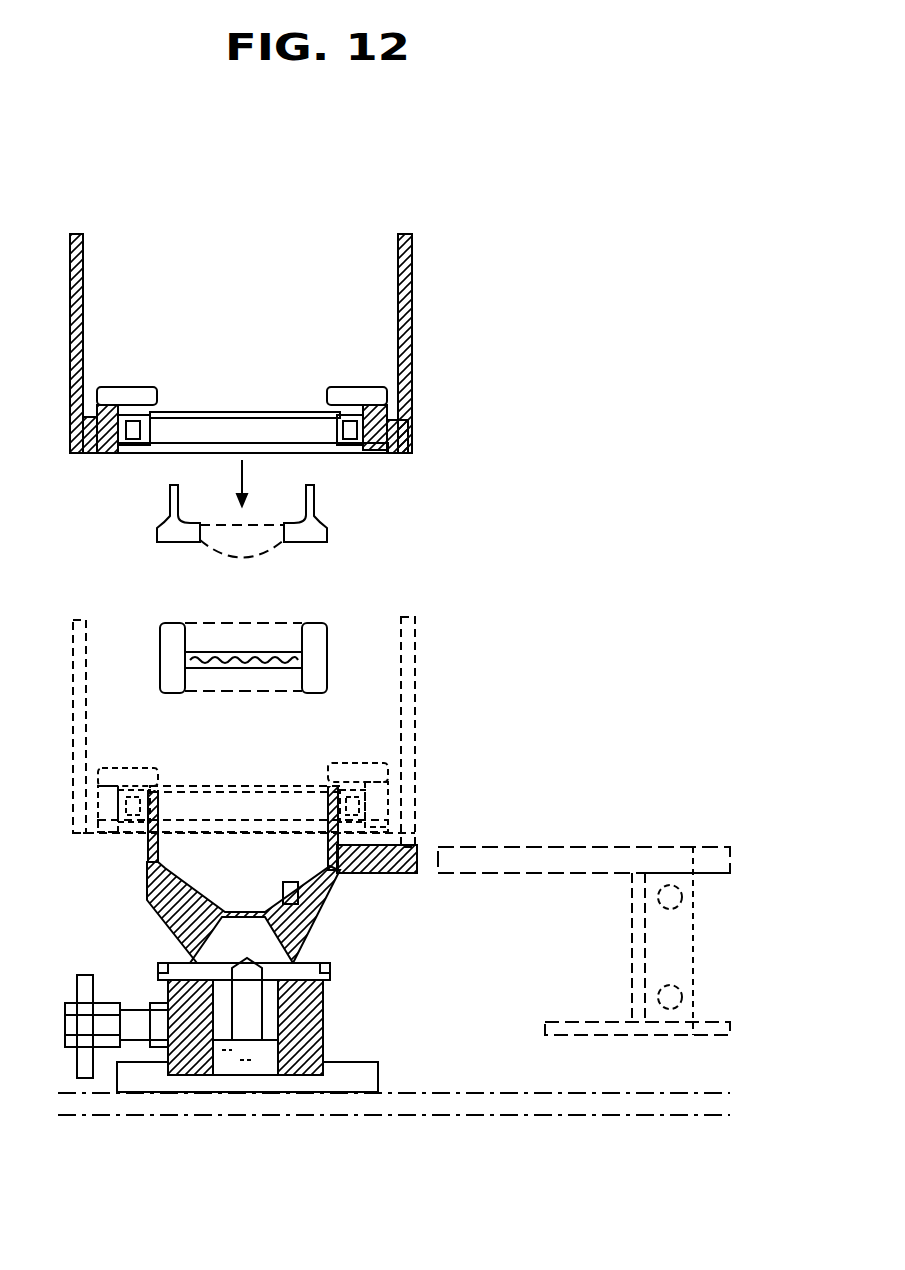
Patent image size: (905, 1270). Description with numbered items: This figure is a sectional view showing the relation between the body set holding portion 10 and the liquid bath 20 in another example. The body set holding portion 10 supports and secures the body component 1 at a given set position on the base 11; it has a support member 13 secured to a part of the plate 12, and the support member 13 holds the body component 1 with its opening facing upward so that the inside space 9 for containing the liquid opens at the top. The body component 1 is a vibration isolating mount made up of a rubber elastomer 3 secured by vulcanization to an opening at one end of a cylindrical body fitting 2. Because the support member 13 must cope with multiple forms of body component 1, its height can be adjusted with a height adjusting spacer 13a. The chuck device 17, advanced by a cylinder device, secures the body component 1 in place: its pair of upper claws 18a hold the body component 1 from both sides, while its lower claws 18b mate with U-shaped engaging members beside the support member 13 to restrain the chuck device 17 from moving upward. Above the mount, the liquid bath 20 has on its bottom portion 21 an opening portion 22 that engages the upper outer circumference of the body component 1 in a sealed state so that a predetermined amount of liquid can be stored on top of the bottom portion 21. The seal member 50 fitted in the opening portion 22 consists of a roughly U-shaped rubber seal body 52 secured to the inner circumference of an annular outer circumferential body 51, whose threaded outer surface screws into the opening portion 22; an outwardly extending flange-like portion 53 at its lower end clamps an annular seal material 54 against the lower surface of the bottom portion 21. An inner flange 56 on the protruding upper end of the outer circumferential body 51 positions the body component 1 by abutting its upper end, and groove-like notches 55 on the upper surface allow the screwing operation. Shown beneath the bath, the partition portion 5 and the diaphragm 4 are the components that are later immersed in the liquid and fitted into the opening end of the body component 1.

The body component 1 is at (140, 878).
The cylindrical body fitting 2 is at (150, 850).
The rubber elastomer 3 is at (167, 925).
The diaphragm 4 is at (170, 500).
The partition portion 5 is at (320, 620).
The inside space 9 is at (258, 873).
The body set holding portion 10 is at (337, 1047).
The base 11 is at (665, 1117).
The plate 12 is at (340, 1080).
The support member 13 is at (197, 1078).
The height adjusting spacer 13a is at (325, 1000).
The chuck device 17 is at (712, 848).
The upper claws 18a is at (558, 847).
The lower claws 18b is at (572, 1093).
The liquid bath 20 is at (415, 290).
The bottom portion 21 is at (403, 430).
The opening portion 22 is at (387, 393).
The seal member 50 is at (355, 763).
The outer circumferential body 51 is at (125, 390).
The seal body 52 is at (145, 428).
The flange-like portion 53 is at (400, 455).
The annular seal material 54 is at (388, 455).
The groove-like notches 55 is at (360, 392).
The inner flange 56 is at (330, 395).